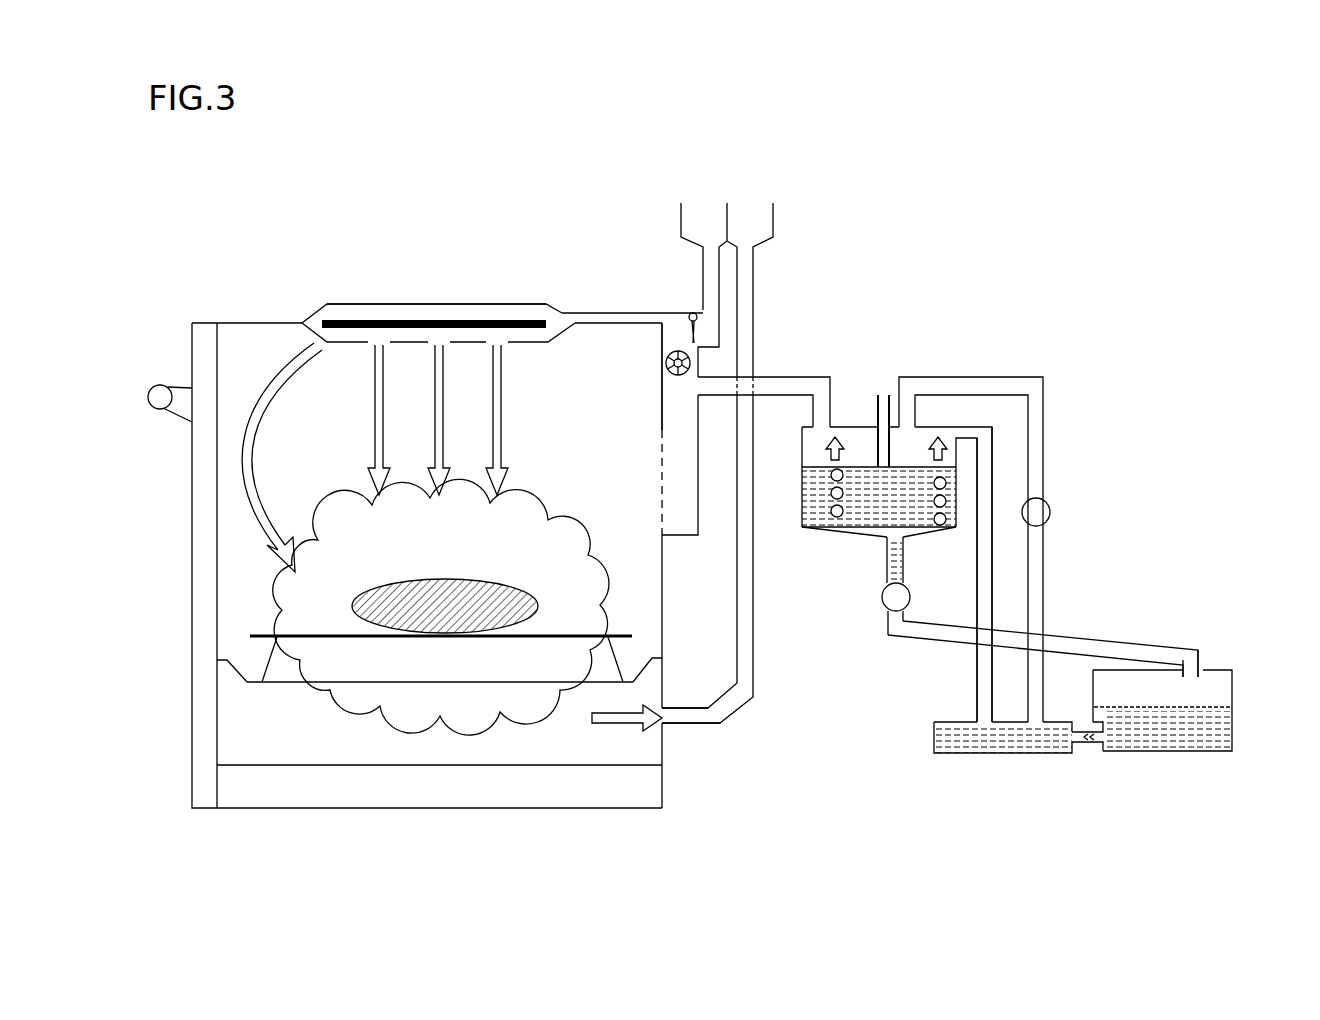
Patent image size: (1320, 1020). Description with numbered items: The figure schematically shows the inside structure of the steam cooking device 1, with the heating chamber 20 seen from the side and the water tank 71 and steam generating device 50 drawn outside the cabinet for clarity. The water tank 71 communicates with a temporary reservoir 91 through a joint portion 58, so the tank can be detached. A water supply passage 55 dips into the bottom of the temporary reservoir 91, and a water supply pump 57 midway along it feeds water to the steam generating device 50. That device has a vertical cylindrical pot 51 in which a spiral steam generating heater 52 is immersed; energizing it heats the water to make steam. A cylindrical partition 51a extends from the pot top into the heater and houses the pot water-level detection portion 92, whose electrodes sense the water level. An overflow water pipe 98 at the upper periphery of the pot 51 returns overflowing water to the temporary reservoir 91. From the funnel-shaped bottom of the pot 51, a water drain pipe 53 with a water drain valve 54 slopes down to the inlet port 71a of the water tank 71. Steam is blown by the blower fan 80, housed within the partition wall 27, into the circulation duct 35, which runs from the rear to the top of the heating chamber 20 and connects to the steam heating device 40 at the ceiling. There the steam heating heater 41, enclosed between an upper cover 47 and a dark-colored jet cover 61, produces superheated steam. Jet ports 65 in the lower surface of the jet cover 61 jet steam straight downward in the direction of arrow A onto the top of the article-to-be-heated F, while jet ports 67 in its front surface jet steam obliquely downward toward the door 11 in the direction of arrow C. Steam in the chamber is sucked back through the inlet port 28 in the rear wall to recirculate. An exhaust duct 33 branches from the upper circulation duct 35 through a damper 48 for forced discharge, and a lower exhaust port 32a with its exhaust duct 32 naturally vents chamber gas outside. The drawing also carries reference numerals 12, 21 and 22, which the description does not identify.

The steam cooking device 1 is at (222, 228).
The door 11 is at (205, 326).
The handle 12 is at (160, 384).
The heating chamber 20 is at (585, 372).
The support 21 is at (283, 684).
The stage 22 is at (262, 636).
The partition wall 27 is at (660, 402).
The inlet port 28 is at (660, 466).
The exhaust duct 32 is at (718, 714).
The exhaust port 32a is at (665, 720).
The exhaust duct 33 is at (703, 278).
The circulation duct 35 is at (680, 422).
The steam heating device 40 is at (352, 304).
The steam heating heater 41 is at (440, 320).
The upper cover 47 is at (485, 304).
The damper 48 is at (692, 338).
The steam generating device 50 is at (848, 372).
The pot 51 is at (820, 532).
The cylindrical partition 51a is at (922, 418).
The steam generating heater 52 is at (845, 530).
The water drain pipe 53 is at (932, 641).
The water drain valve 54 is at (882, 601).
The water supply passage 55 is at (1045, 592).
The water supply pump 57 is at (1051, 512).
The joint portion 58 is at (1080, 746).
The jet cover 61 is at (525, 345).
The jet ports 65 is at (375, 345).
The jet ports 67 is at (320, 345).
The water tank 71 is at (1185, 753).
The inlet port 71a is at (1190, 667).
The blower fan 80 is at (666, 363).
The temporary reservoir 91 is at (970, 756).
The pot water-level detection portion 92 is at (884, 393).
The overflow water pipe 98 is at (976, 548).
The arrow A is at (438, 420).
The arrow C is at (282, 457).
The article-to-be-heated F is at (520, 590).